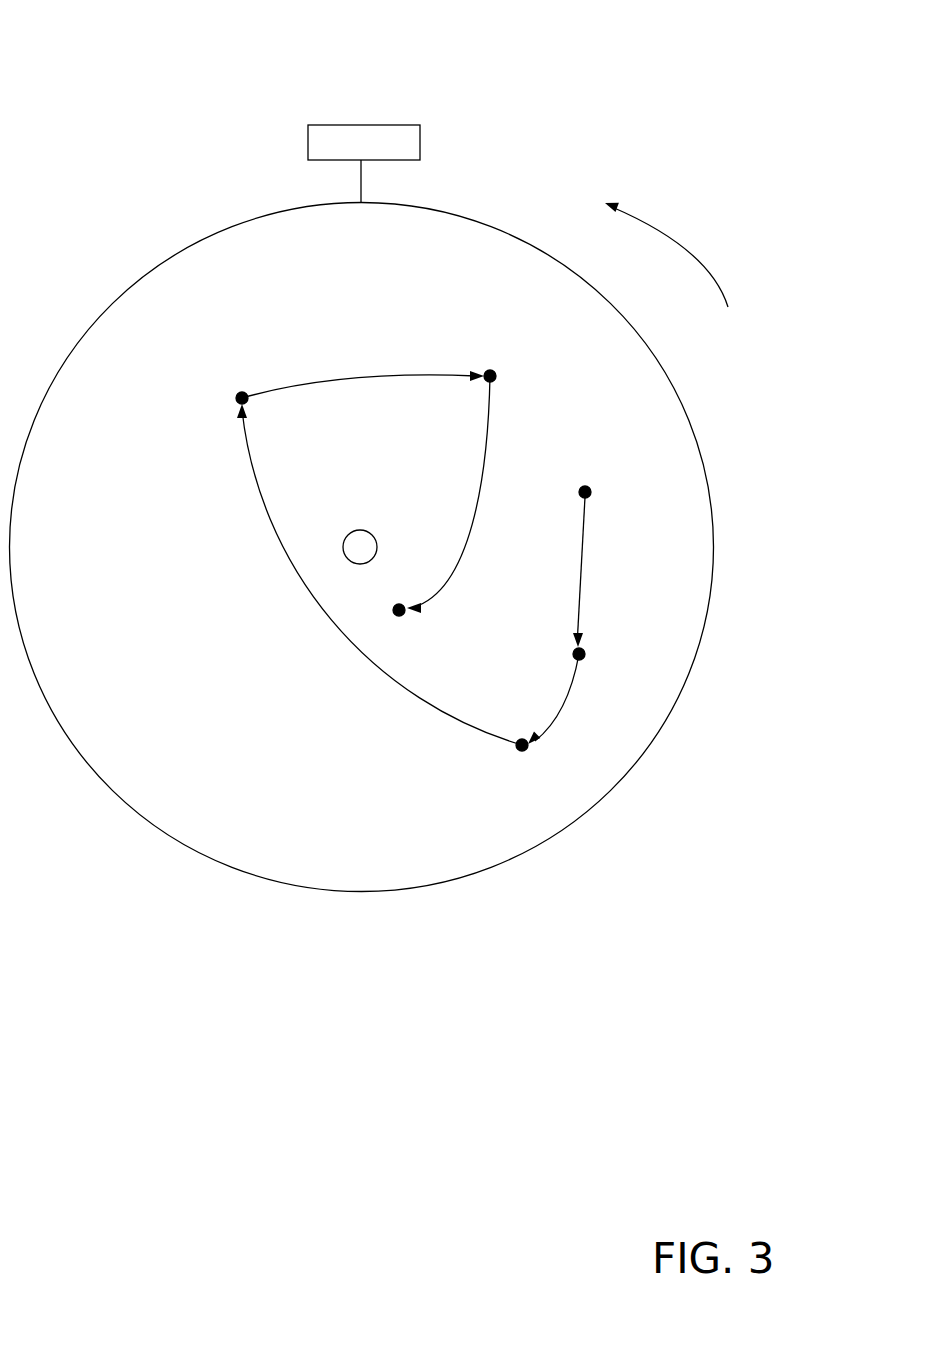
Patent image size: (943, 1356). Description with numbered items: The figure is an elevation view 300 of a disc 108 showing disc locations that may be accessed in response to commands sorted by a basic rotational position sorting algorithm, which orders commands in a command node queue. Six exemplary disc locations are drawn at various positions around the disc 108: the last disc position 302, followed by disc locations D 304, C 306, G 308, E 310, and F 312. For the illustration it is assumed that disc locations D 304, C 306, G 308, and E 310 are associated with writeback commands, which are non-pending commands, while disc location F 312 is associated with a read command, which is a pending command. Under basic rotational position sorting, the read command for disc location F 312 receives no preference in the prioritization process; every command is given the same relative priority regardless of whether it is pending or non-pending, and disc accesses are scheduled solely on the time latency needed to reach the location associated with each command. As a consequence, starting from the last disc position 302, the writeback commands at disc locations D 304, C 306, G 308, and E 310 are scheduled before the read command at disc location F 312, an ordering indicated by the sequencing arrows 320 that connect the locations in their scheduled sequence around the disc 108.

The disk rotation diagram 300 is at (106, 54).
The disc 108 is at (206, 829).
The last disc position (LDP) 302 is at (590, 497).
The disc location D 304 is at (582, 660).
The disc location C 306 is at (516, 750).
The disc location G 308 is at (240, 399).
The disc location E 310 is at (495, 380).
The disc location F 312 is at (403, 616).
The sequencing arrows 320 is at (302, 580).